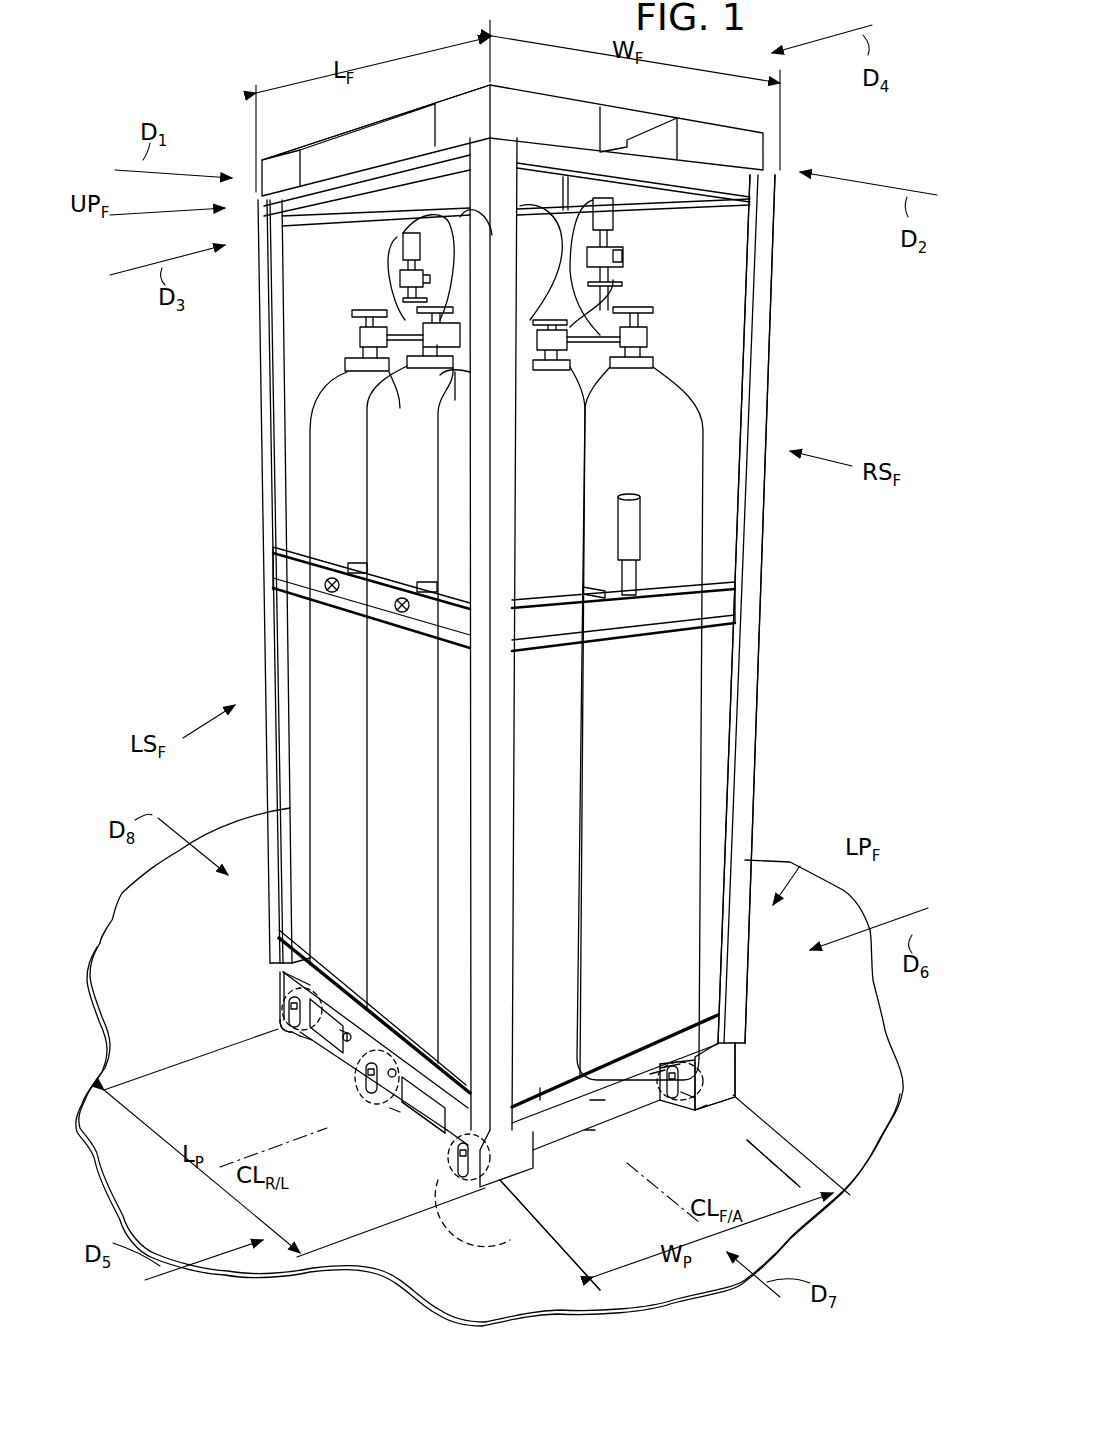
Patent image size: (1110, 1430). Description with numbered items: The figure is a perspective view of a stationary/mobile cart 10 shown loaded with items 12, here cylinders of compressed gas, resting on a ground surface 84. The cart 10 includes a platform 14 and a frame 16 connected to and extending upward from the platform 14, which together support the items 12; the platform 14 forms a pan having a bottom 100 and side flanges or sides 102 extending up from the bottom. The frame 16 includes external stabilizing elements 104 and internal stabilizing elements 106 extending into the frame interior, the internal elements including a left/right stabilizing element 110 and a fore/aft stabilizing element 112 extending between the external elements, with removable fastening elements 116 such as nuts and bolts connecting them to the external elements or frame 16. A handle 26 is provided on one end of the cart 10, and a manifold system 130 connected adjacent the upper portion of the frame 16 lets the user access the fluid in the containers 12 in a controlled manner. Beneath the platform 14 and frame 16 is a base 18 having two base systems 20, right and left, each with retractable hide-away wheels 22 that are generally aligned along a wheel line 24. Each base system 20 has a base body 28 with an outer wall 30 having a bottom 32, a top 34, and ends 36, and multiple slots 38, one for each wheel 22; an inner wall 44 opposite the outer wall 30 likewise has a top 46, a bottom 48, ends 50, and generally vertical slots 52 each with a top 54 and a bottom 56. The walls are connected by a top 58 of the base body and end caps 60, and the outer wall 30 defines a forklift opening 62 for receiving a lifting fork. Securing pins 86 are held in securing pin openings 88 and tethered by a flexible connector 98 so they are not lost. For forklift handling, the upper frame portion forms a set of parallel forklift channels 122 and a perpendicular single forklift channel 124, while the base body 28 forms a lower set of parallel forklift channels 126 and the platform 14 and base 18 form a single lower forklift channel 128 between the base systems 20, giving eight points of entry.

The mobile cart 10 is at (270, 73).
The items 12 is at (622, 762).
The platform 14 is at (600, 1090).
The frame 16 is at (770, 340).
The base 18 is at (256, 972).
The base system 20 is at (494, 1168).
The retractable wheels 22 is at (455, 1237).
The wheel line 24 is at (513, 1240).
The handling element 26 is at (636, 522).
The base body 28 is at (392, 1112).
The outer wall 30 is at (468, 1160).
The bottom of outer wall 32 is at (308, 1042).
The top of outer wall 34 is at (278, 964).
The ends of outer wall 36 is at (282, 997).
The slots 38 is at (295, 990).
The inner wall 44 is at (495, 1158).
The top of inner wall 46 is at (678, 1052).
The bottom of inner wall 48 is at (680, 1104).
The ends of inner wall 50 is at (707, 1110).
The slots of inner wall 52 is at (660, 1072).
The top of inner wall slot 54 is at (668, 1060).
The bottom of inner wall slot 56 is at (672, 1100).
The top of base body 58 is at (745, 1030).
The end caps 60 is at (738, 1082).
The forklift opening 62 is at (343, 1040).
The ground surface 84 is at (156, 919).
The securing pins 86 is at (393, 1112).
The securing pin openings 88 is at (340, 1035).
The flexible connector 98 is at (352, 1052).
The bottom of platform 100 is at (599, 1103).
The sides of platform 102 is at (548, 1095).
The external stabilizing elements 104 is at (545, 605).
The internal stabilizing elements 106 is at (425, 580).
The left/right stabilizing element 110 is at (355, 563).
The fore/aft stabilizing element 112 is at (600, 588).
The removable fastening elements 116 is at (334, 595).
The dual upper forklift channels 122 is at (337, 147).
The single upper forklift channel 124 is at (657, 117).
The lower forklift channels 126 is at (425, 1112).
The single lower forklift channel 128 is at (590, 1137).
The manifold system 130 is at (676, 235).